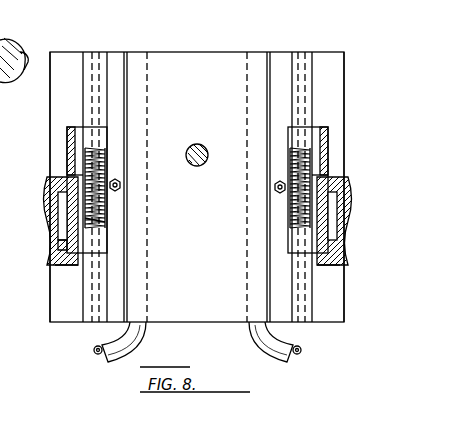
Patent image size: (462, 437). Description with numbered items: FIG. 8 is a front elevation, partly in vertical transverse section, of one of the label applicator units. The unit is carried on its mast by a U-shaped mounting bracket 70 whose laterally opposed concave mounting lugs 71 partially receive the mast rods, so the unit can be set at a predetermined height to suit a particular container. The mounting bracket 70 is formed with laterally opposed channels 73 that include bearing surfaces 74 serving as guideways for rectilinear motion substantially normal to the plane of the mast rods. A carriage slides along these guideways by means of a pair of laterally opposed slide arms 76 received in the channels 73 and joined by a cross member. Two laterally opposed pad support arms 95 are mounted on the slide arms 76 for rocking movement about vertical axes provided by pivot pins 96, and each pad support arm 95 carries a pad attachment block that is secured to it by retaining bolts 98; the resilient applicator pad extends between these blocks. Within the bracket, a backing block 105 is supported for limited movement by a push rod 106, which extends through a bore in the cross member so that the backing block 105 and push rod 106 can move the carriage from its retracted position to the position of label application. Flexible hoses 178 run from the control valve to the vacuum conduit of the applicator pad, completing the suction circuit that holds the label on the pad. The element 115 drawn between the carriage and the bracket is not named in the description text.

The guide block 70 is at (58, 212).
The roller 71 is at (8, 42).
The spring seat 73 is at (100, 218).
The pin 74 is at (66, 246).
The retainer 76 is at (80, 262).
The side wall 95 is at (62, 76).
The guide rail 96 is at (100, 85).
The screw 98 is at (121, 185).
The frame plate 105 is at (228, 113).
The shaft 106 is at (197, 167).
The compression spring 115 is at (106, 162).
The curved tube 178 is at (110, 346).